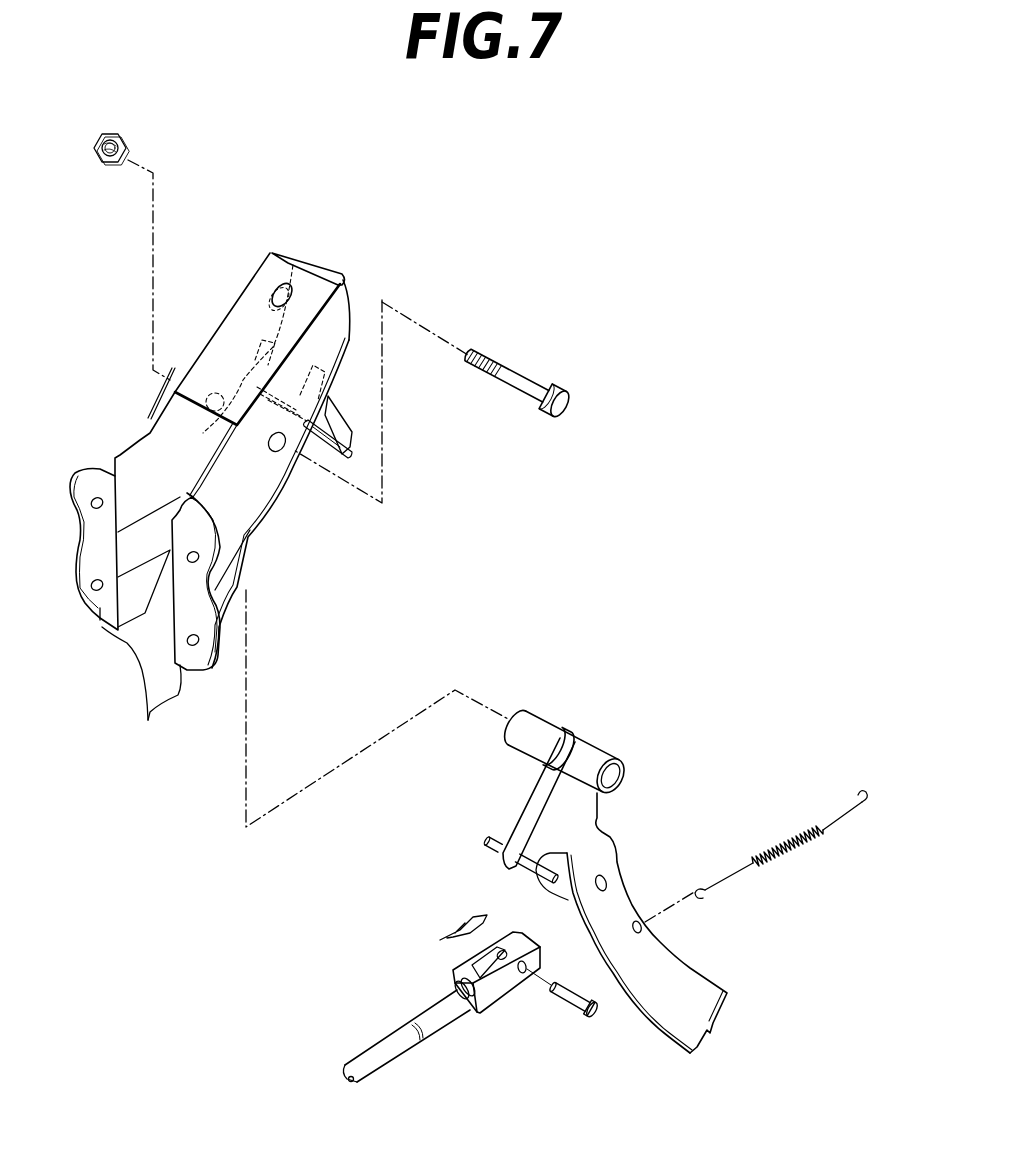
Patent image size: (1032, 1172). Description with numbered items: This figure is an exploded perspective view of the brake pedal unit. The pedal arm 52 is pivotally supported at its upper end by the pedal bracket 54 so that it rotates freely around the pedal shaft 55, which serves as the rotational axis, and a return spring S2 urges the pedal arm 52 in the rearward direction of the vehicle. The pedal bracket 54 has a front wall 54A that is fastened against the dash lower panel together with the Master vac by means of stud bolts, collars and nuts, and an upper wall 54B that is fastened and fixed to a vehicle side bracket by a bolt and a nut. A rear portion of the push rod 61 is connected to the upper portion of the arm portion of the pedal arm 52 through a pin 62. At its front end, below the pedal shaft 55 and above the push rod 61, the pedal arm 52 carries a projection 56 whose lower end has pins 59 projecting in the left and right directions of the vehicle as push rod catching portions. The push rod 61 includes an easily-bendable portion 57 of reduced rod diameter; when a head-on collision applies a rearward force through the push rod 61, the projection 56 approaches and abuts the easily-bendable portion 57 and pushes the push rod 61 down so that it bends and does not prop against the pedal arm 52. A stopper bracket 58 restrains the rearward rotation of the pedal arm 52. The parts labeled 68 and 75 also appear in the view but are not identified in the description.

The pedal arm 52 is at (670, 940).
The pedal bracket 54 is at (359, 276).
The front wall of pedal bracket 54A is at (127, 617).
The upper wall of pedal bracket 54B is at (293, 257).
The pedal shaft 55 is at (507, 380).
The projection 56 is at (487, 850).
The easily-bendable portion 57 is at (420, 1047).
The stopper bracket 58 is at (338, 427).
The pins 59 is at (541, 841).
The push rod 61 is at (435, 1030).
The pin 62 is at (563, 1000).
The hole 68 is at (273, 290).
The pivot cylinder 75 is at (605, 747).
The return spring S2 is at (800, 828).